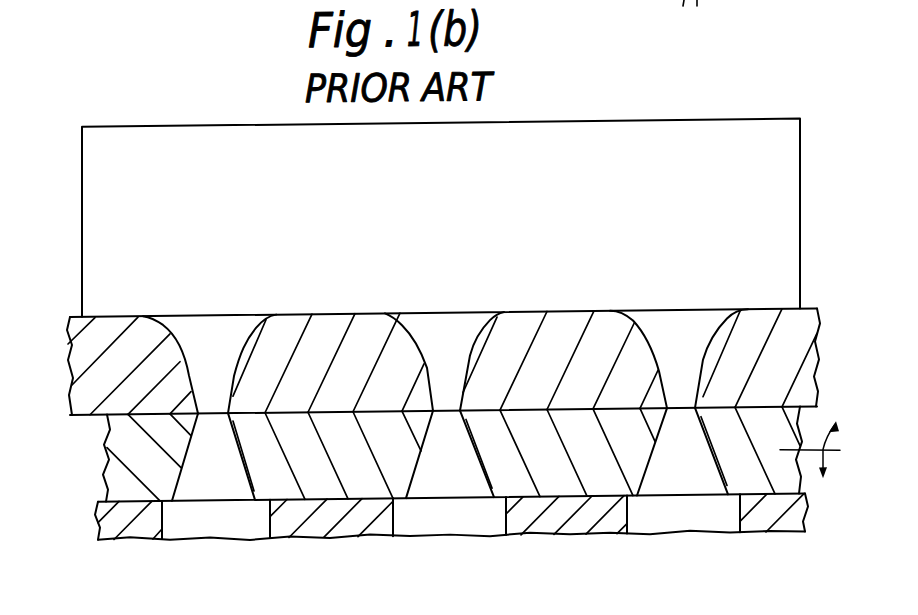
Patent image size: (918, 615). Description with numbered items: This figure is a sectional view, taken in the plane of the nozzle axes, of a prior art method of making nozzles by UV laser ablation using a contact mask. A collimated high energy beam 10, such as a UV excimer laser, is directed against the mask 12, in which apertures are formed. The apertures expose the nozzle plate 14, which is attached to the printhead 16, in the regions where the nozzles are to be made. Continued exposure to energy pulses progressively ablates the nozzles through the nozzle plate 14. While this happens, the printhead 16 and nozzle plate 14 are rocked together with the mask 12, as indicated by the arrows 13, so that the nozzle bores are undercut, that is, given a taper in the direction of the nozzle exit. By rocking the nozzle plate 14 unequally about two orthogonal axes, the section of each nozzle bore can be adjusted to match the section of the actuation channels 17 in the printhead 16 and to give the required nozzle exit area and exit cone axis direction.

The collimated high energy beam 10 is at (542, 154).
The mask 12 is at (70, 370).
The arrows 13 is at (836, 470).
The nozzle plate 14 is at (107, 458).
The printhead 16 is at (98, 522).
The actuation channels 17 is at (252, 522).